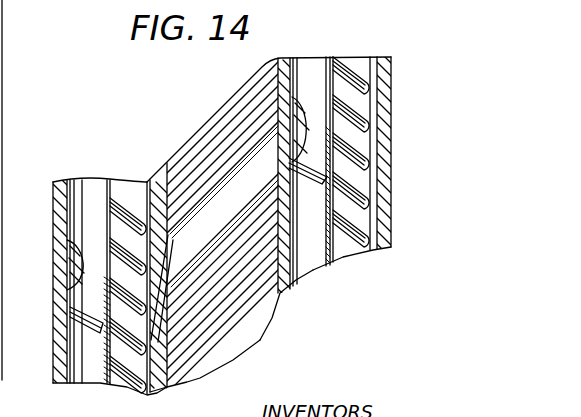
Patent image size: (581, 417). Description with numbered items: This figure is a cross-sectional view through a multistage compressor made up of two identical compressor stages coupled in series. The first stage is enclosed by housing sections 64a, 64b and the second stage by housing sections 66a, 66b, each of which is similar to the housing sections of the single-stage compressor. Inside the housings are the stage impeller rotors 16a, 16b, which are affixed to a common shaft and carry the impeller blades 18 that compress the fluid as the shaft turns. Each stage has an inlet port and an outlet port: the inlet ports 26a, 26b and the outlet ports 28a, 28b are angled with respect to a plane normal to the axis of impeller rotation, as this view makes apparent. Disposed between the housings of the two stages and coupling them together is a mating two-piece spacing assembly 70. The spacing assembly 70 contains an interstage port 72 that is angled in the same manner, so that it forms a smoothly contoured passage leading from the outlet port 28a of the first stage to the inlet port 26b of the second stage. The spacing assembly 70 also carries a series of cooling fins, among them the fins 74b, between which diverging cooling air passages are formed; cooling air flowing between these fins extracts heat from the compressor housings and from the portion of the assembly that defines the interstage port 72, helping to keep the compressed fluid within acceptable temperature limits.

The cooling fins 74b is at (2, 76).
The housing section 64a is at (60, 188).
The housing section 64b is at (166, 382).
The impeller blades 18 is at (123, 200).
The inlet port 26a is at (60, 313).
The inlet port 26b is at (289, 95).
The outlet port 28a is at (152, 327).
The outlet port 28b is at (388, 110).
The impeller rotor 16a is at (118, 378).
The impeller rotor 16b is at (351, 250).
The interstage port 72 is at (253, 159).
The spacing assembly 70 is at (250, 338).
The housing section 66a is at (282, 292).
The housing section 66b is at (388, 240).